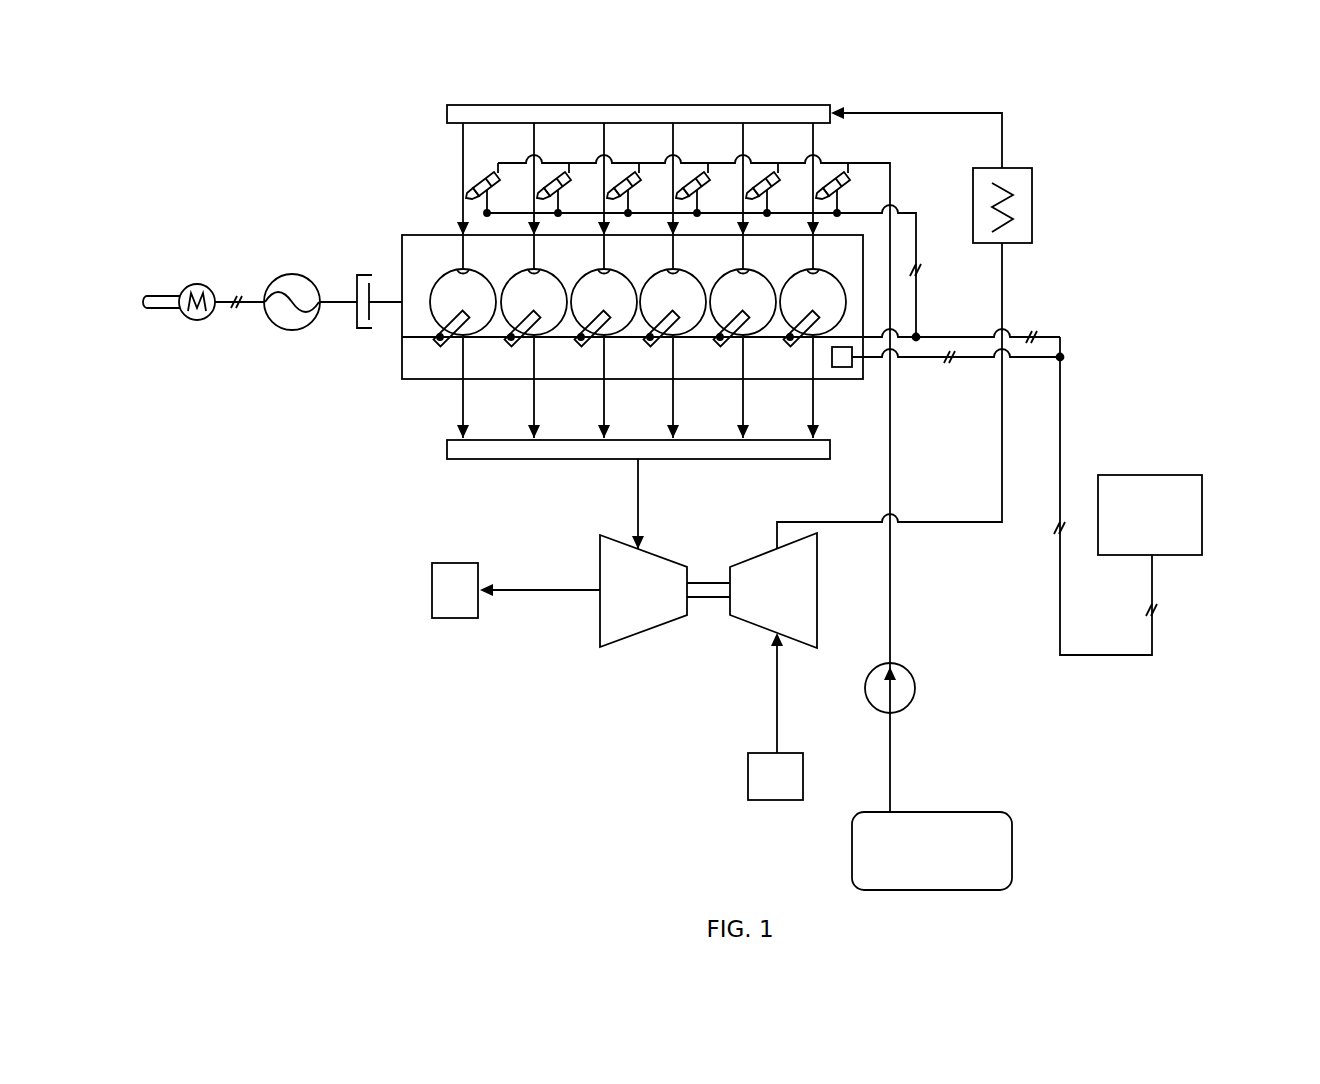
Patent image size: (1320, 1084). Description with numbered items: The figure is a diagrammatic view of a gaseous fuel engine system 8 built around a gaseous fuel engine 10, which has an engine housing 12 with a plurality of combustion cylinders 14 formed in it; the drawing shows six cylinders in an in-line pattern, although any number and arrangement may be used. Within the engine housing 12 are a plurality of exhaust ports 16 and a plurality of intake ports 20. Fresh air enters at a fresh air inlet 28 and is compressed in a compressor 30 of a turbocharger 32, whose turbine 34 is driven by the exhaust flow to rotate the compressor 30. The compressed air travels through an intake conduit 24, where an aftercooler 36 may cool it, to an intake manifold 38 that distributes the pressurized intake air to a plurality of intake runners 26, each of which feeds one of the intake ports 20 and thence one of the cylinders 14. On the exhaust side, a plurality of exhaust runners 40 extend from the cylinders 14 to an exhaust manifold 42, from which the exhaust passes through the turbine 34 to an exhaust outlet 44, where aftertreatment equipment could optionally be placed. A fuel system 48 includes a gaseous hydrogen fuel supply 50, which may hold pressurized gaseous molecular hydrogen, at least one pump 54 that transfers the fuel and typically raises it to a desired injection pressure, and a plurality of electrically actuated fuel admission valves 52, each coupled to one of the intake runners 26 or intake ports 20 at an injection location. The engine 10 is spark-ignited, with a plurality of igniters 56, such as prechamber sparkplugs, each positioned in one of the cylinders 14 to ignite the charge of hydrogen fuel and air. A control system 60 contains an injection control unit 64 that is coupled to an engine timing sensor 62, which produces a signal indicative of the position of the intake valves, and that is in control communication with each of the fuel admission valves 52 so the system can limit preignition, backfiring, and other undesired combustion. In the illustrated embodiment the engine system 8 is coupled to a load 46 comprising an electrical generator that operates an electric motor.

The gaseous fuel engine system 8 is at (262, 115).
The gaseous fuel engine 10 is at (691, 280).
The engine housing 12 is at (436, 233).
The combustion cylinders 14 is at (480, 274).
The exhaust ports 16 is at (460, 361).
The intake ports 20 is at (459, 240).
The intake conduit 24 is at (918, 111).
The intake runners 26 is at (459, 138).
The fresh air inlet 28 is at (805, 763).
The compressor 30 is at (752, 623).
The turbocharger 32 is at (708, 622).
The turbine 34 is at (676, 560).
The aftercooler 36 is at (1034, 185).
The intake manifold 38 is at (652, 104).
The exhaust runners 40 is at (460, 399).
The exhaust manifold 42 is at (533, 461).
The exhaust outlet 44 is at (453, 620).
The load 46 is at (253, 324).
The fuel system 48 is at (1001, 909).
The gaseous hydrogen fuel supply 50 is at (1014, 822).
The fuel admission valves 52 is at (497, 178).
The pump 54 is at (917, 688).
The igniters 56 is at (450, 317).
The control system 60 is at (1144, 493).
The engine timing sensor 62 is at (852, 372).
The injection control unit 64 is at (1204, 490).